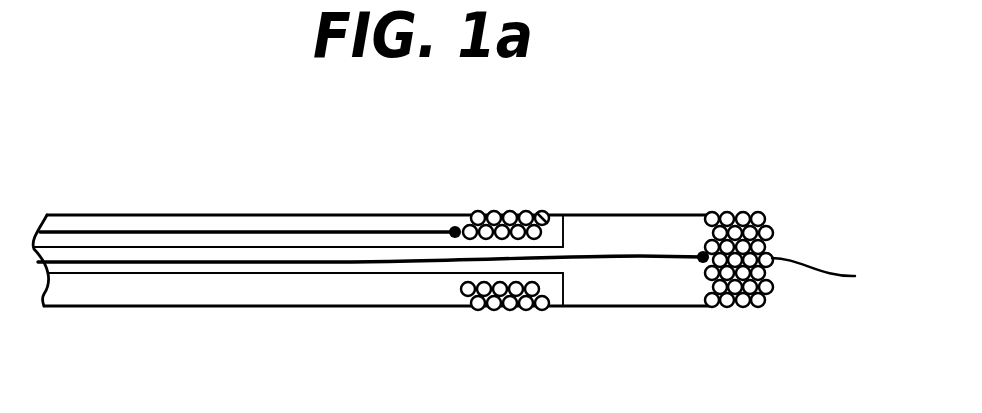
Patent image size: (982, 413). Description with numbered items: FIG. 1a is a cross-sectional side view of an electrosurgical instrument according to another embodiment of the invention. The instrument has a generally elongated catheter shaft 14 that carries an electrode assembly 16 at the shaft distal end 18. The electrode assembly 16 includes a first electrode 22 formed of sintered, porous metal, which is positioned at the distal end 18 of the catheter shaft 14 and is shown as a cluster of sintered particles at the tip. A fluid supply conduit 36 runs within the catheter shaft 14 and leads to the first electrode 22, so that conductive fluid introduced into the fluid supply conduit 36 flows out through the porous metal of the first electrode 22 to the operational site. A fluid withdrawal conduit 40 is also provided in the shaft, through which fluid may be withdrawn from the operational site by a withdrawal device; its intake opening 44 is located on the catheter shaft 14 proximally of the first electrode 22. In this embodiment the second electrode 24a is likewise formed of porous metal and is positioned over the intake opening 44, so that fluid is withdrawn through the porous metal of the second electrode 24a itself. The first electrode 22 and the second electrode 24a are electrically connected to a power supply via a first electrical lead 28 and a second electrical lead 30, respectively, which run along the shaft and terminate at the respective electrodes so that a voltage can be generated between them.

The shaft 14 is at (135, 307).
The electrode assembly 16 is at (652, 307).
The distal end 18 is at (831, 274).
The first electrode 22 is at (744, 212).
The second electrode 24a is at (478, 211).
The first electrical lead 28 is at (348, 264).
The second electrical lead 30 is at (323, 232).
The fluid supply conduit 36 is at (245, 252).
The fluid withdrawal conduit 40 is at (225, 291).
The intake opening 44 is at (541, 210).